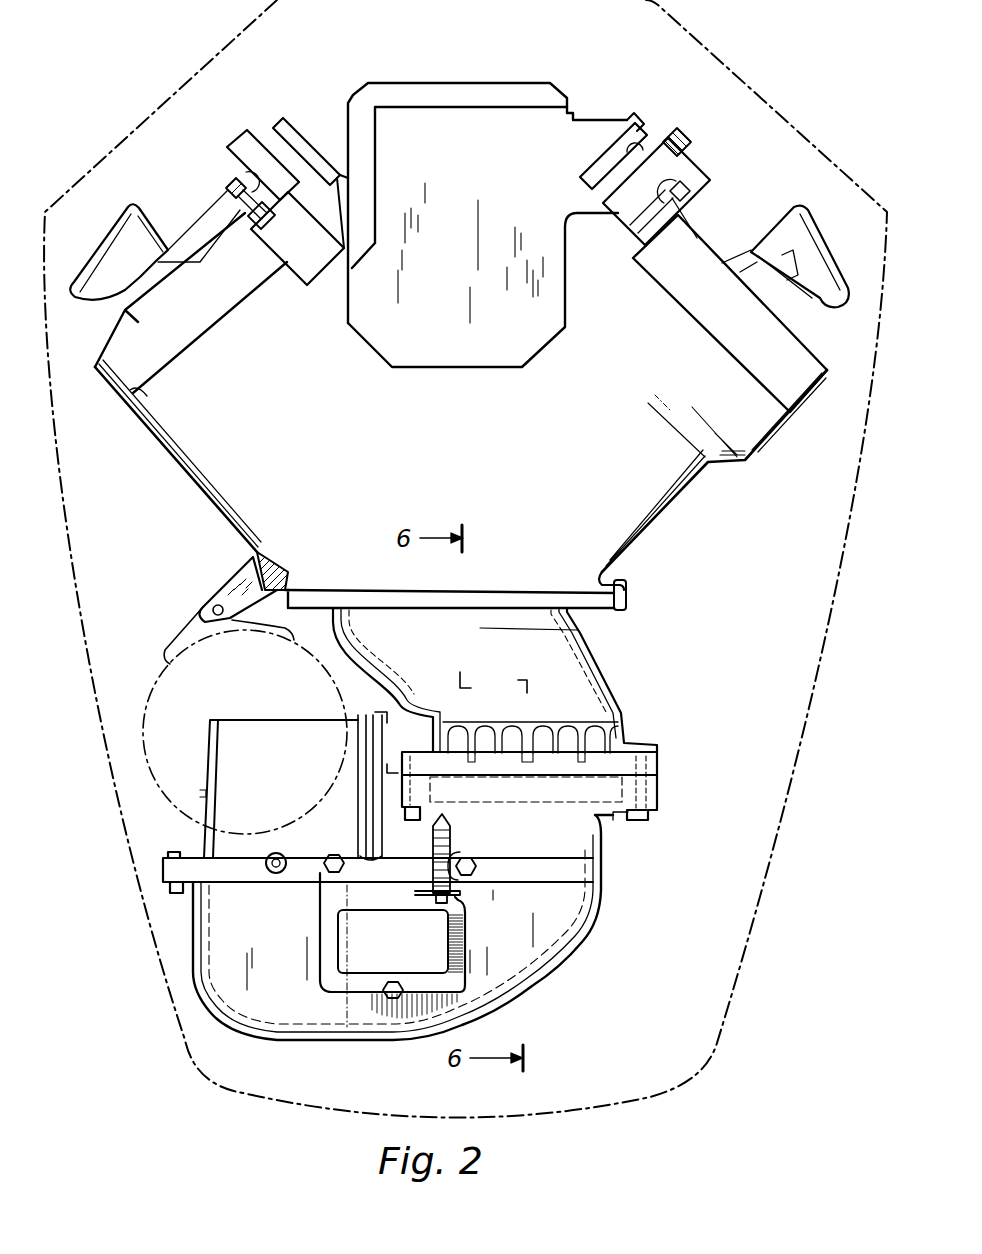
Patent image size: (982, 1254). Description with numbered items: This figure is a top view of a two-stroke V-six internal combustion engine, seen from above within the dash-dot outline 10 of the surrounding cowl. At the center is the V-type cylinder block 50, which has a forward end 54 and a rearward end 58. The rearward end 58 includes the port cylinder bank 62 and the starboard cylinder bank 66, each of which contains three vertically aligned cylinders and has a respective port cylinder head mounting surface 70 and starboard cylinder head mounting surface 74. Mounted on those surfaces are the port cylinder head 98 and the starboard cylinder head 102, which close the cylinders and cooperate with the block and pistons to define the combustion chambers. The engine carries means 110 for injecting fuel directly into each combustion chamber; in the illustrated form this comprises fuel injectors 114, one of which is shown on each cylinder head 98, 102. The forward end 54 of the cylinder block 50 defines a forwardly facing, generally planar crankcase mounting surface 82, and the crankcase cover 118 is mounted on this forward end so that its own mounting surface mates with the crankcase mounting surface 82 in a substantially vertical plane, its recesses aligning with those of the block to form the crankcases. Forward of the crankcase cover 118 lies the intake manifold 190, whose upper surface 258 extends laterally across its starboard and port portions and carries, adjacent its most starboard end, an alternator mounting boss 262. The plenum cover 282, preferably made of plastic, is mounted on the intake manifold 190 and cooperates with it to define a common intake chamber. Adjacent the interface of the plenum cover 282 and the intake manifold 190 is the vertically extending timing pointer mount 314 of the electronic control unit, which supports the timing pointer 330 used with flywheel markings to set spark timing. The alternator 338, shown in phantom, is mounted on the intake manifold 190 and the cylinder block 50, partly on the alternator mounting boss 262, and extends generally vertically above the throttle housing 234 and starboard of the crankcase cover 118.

The outboard motor cowling outline 10 is at (766, 108).
The cylinder block 50 is at (482, 490).
The forward end 54 is at (627, 582).
The rearward end 58 is at (626, 255).
The port cylinder bank 62 is at (696, 375).
The starboard cylinder bank 66 is at (276, 355).
The port cylinder head mounting surface 70 is at (810, 408).
The starboard cylinder head mounting surface 74 is at (133, 396).
The crankcase mounting surface 82 is at (613, 612).
The port cylinder head 98 is at (826, 372).
The starboard cylinder head 102 is at (130, 385).
The means for injecting fuel 110 is at (706, 204).
The fuel injector 114 is at (678, 176).
The crankcase cover 118 is at (570, 688).
The intake manifold 190 is at (573, 848).
The throttle housing 234 is at (212, 842).
The upper surface 258 is at (590, 875).
The alternator mounting boss 262 is at (272, 875).
The plenum cover 282 is at (540, 945).
The timing pointer mount 314 is at (432, 957).
The timing pointer 330 is at (452, 830).
The alternator 338 is at (193, 661).